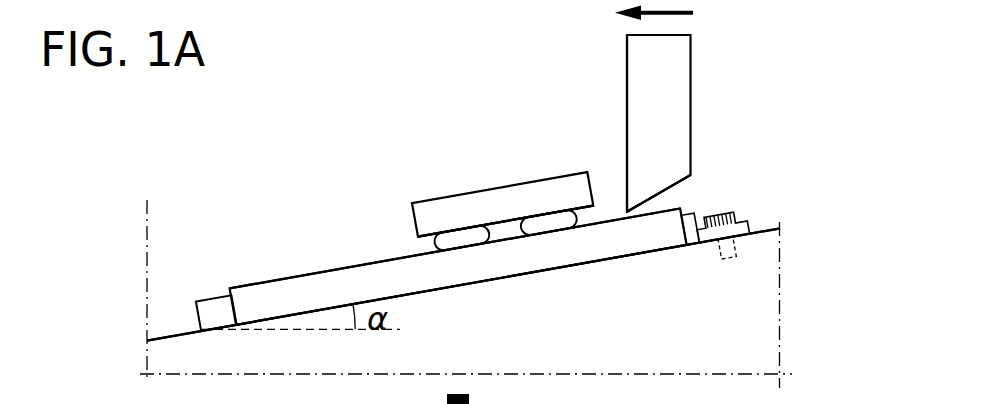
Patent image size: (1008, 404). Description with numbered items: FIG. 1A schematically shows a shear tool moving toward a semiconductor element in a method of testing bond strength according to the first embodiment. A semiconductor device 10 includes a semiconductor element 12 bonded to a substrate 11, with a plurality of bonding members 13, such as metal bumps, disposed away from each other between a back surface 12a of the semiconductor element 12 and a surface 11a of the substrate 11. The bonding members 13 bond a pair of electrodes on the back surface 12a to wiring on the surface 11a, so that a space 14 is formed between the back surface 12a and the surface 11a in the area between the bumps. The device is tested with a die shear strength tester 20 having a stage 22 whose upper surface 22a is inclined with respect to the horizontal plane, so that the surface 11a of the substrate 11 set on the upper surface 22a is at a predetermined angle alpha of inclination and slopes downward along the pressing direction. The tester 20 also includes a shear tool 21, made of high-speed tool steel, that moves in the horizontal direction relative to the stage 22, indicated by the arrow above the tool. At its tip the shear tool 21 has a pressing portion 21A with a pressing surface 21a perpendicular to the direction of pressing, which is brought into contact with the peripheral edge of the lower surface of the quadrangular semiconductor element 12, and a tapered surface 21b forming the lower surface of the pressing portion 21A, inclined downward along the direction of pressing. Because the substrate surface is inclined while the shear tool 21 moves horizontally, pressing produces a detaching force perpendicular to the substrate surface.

The semiconductor device 10 is at (490, 145).
The substrate 11 is at (307, 288).
The surface of the substrate 11a is at (338, 272).
The semiconductor element 12 is at (478, 205).
The back surface of the semiconductor element 12a is at (499, 226).
The bonding members 13 is at (465, 247).
The space 14 is at (520, 226).
The die shear strength tester 20 is at (785, 95).
The shear tool 21 is at (708, 88).
The pressing surface 21a is at (623, 183).
The pressing portion 21A is at (648, 177).
The tapered surface 21b is at (660, 198).
The stage 22 is at (740, 283).
The upper surface of the stage 22a is at (393, 295).